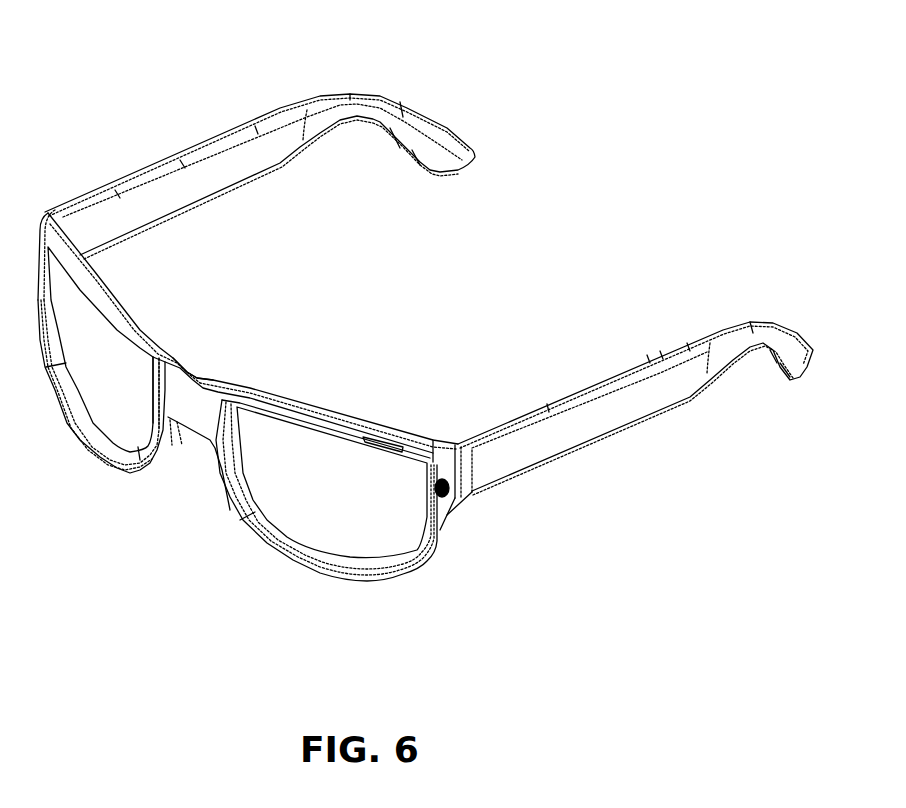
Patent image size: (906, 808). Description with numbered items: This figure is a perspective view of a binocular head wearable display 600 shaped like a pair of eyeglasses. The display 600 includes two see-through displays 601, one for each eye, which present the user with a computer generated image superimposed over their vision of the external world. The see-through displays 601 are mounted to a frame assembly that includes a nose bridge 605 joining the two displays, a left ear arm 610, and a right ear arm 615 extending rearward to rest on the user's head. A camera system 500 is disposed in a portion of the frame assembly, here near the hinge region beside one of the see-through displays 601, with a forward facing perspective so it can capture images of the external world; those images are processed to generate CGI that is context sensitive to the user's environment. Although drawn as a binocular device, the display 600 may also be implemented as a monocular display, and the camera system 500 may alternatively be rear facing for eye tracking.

The binocular head wearable display 600 is at (577, 96).
The see-through display 601 is at (237, 414).
The nose bridge 605 is at (190, 386).
The left ear arm 610 is at (630, 390).
The right ear arm 615 is at (173, 170).
The camera system 500 is at (446, 493).